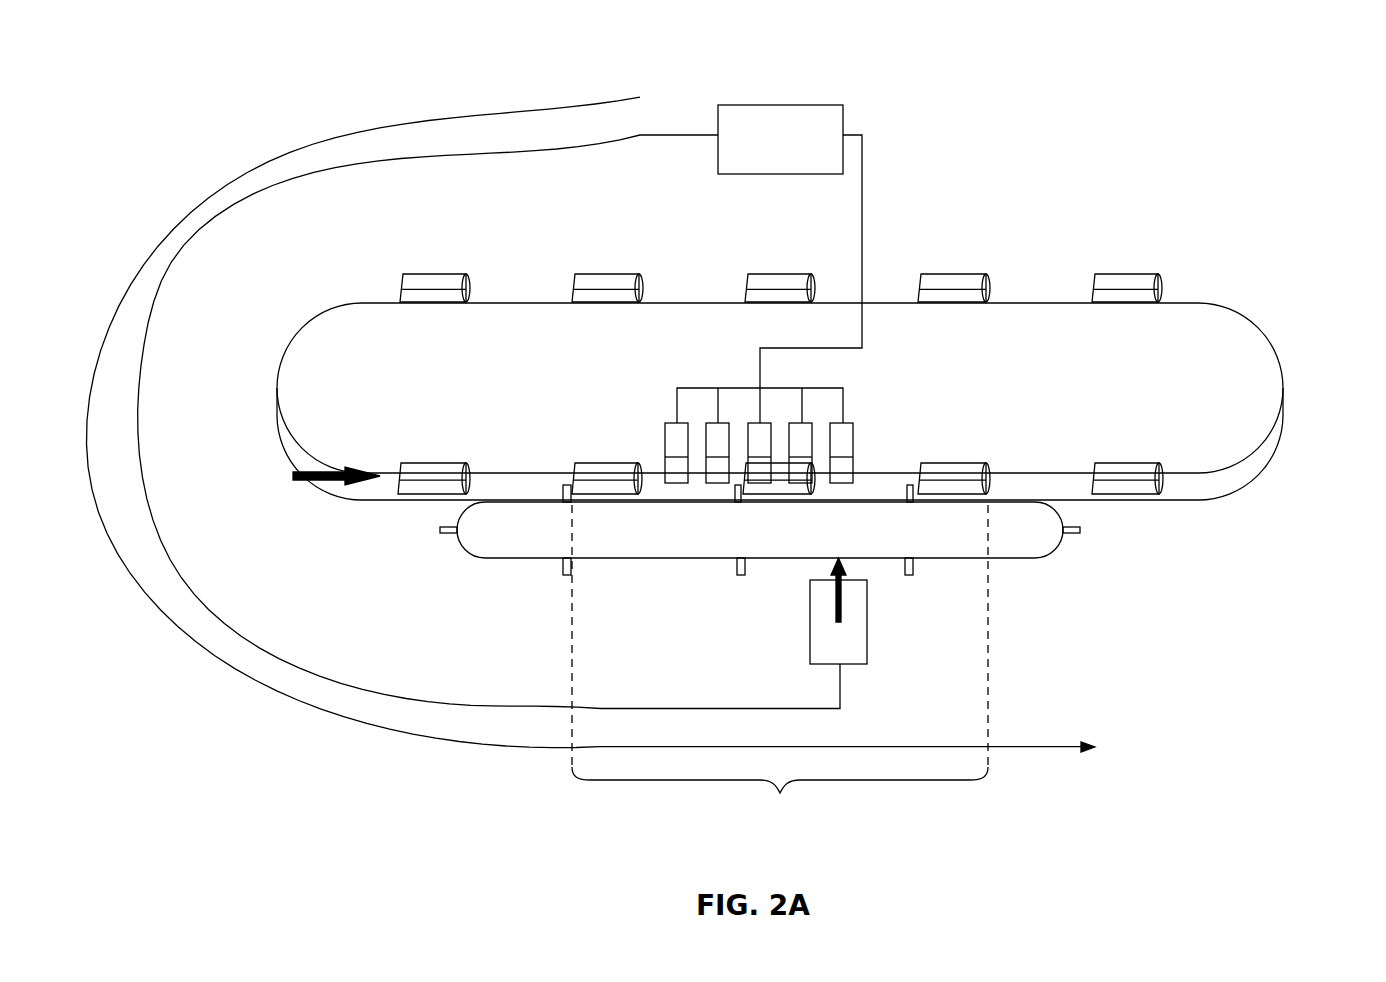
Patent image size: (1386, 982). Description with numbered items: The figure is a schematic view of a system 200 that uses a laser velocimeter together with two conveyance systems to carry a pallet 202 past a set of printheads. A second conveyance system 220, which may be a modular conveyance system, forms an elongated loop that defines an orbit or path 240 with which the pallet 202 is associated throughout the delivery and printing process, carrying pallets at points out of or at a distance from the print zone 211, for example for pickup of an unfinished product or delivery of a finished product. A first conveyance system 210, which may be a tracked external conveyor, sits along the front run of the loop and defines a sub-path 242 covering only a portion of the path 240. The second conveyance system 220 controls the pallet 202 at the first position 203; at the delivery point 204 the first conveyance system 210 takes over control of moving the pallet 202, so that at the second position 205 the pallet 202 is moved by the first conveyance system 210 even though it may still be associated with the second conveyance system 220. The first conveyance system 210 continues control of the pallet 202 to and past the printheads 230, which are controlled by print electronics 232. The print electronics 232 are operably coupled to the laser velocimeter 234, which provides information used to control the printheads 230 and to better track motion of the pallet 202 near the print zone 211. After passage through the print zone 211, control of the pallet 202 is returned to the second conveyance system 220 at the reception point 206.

The system 200 is at (1060, 97).
The pallet 202 is at (455, 278).
The first position 203 is at (436, 442).
The delivery point 204 is at (568, 408).
The second position 205 is at (643, 443).
The reception point 206 is at (953, 425).
The first conveyance system 210 is at (659, 541).
The print zone 211 is at (721, 638).
The second conveyance system 220 is at (1268, 338).
The printheads 230 is at (680, 428).
The print electronics 232 is at (756, 151).
The laser velocimeter 234 is at (868, 645).
The path 240 is at (1030, 748).
The sub-path 242 is at (780, 669).